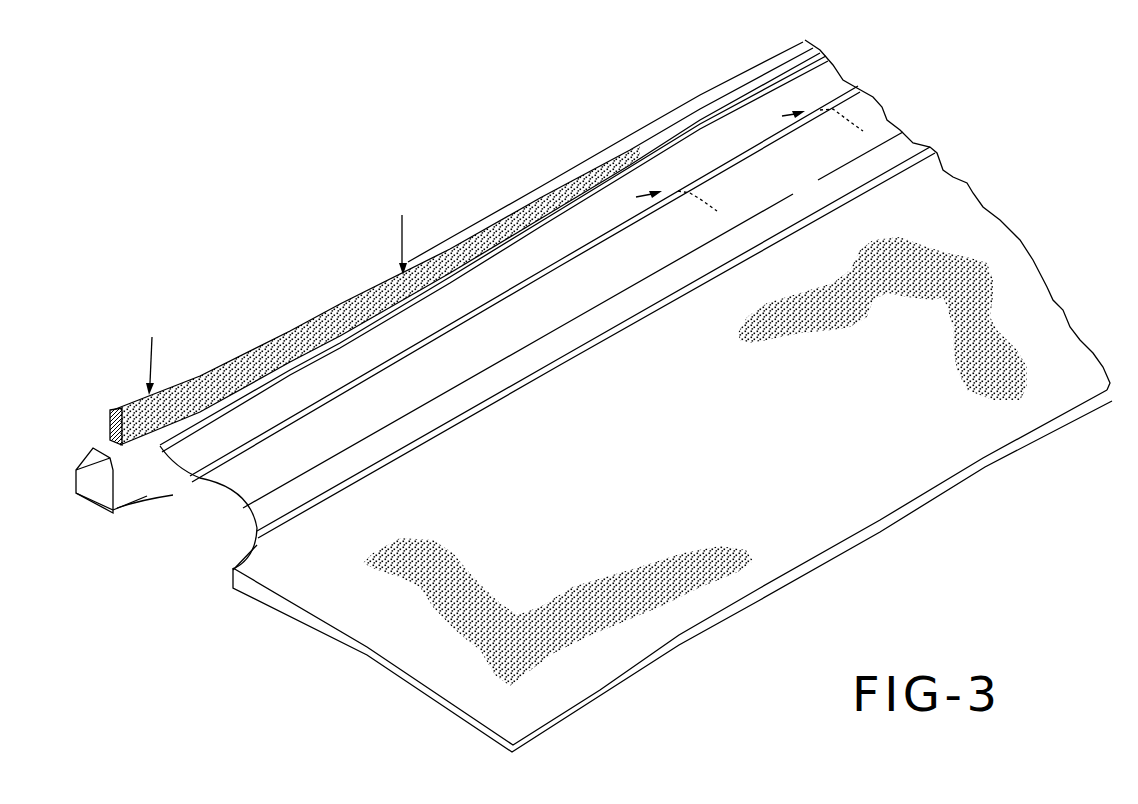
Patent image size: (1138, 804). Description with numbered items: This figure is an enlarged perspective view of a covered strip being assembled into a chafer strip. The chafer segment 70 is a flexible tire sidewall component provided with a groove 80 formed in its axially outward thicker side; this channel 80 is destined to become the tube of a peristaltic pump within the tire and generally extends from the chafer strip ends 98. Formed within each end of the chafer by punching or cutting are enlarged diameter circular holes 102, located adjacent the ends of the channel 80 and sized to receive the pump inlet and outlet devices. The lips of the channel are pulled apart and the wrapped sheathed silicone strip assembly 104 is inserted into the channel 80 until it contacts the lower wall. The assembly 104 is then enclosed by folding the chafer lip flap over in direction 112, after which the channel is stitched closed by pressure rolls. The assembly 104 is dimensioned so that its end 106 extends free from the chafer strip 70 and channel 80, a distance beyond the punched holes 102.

The chafer segment 70 is at (406, 629).
The groove 80 is at (150, 483).
The chafer strip ends 98 is at (77, 491).
The circular holes 102 is at (199, 554).
The sheathed silicone strip assembly 104 is at (283, 334).
The assembly end 106 is at (116, 401).
The direction 112 is at (749, 160).